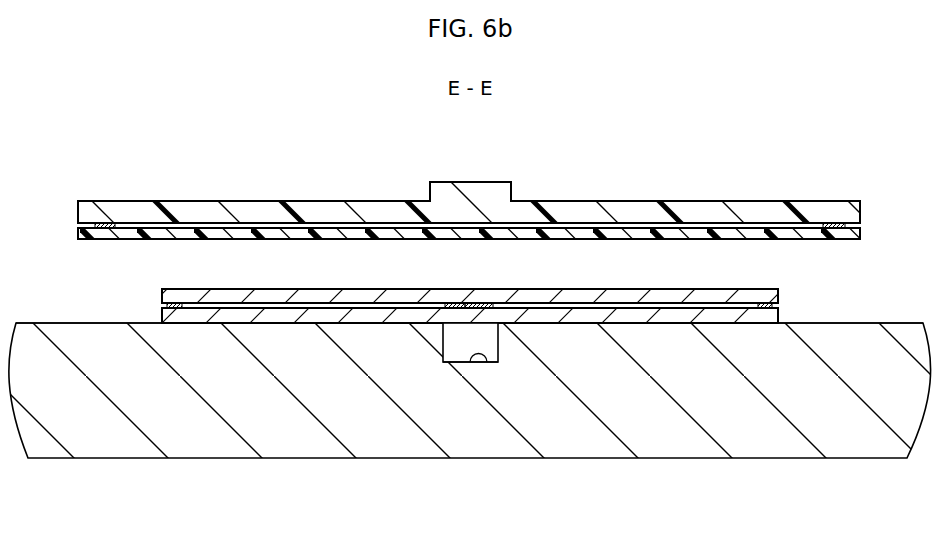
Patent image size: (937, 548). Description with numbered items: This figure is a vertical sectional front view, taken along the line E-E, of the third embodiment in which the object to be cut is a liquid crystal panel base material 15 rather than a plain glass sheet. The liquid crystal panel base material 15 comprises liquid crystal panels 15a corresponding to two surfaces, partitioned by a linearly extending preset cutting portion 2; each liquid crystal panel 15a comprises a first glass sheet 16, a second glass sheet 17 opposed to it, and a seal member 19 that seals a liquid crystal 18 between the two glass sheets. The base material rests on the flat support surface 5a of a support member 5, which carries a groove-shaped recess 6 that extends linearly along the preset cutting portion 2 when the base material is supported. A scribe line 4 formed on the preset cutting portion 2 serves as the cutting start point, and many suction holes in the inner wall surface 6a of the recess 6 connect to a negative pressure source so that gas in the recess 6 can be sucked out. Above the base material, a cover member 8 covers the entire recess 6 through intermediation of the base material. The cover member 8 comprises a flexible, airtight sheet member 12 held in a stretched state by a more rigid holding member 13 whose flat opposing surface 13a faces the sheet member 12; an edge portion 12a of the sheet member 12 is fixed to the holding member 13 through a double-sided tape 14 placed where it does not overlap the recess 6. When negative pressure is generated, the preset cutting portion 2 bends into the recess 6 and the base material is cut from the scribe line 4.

The preset cutting portion 2 is at (480, 302).
The scribe line 4 is at (467, 324).
The support member 5 is at (470, 398).
The support surface 5a is at (889, 322).
The recess 6 is at (492, 380).
The inner wall surface 6a is at (480, 351).
The cover member 8 is at (470, 192).
The sheet member 12 is at (78, 236).
The edge portion 12a is at (104, 240).
The holding member 13 is at (78, 211).
The opposing surface 13a is at (334, 228).
The double-sided tape 14 is at (104, 224).
The liquid crystal panel base material 15 is at (500, 244).
The liquid crystal panel 15a is at (280, 285).
The first glass sheet 16 is at (779, 314).
The second glass sheet 17 is at (779, 296).
The liquid crystal 18 is at (321, 302).
The seal member 19 is at (177, 302).